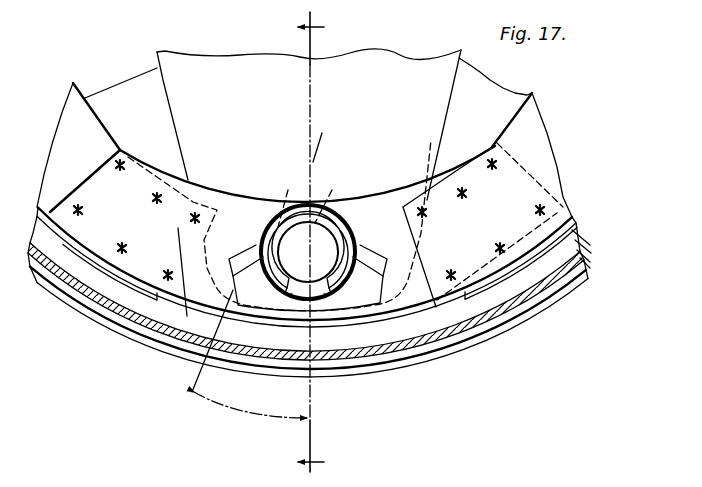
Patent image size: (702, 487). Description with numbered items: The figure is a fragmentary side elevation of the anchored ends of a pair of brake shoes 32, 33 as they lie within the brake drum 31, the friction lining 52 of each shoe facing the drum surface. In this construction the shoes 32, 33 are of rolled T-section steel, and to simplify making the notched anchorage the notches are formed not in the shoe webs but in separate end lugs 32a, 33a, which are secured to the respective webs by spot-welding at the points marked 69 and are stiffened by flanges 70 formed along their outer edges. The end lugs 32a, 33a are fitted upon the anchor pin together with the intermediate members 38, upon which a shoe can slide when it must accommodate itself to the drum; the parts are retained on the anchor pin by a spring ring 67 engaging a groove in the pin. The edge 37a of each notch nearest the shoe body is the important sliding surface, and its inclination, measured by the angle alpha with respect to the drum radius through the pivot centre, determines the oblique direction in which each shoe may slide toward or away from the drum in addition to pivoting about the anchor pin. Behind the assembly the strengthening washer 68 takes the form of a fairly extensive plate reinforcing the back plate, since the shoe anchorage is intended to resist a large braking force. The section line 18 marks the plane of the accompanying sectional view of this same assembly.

The section line 18- 18 is at (324, 241).
The brake drum 31 is at (130, 317).
The brake shoe 32 is at (80, 123).
The end lug 32a is at (213, 190).
The brake shoe 33 is at (451, 172).
The end lug 33a is at (412, 186).
The edge of the notch 37a is at (278, 203).
The intermediate member 38 is at (323, 186).
The lining 52 is at (108, 278).
The spring ring 67 is at (336, 196).
The strengthening washer 68 is at (309, 124).
The spot welds 69 is at (166, 270).
The flange 70 is at (322, 262).